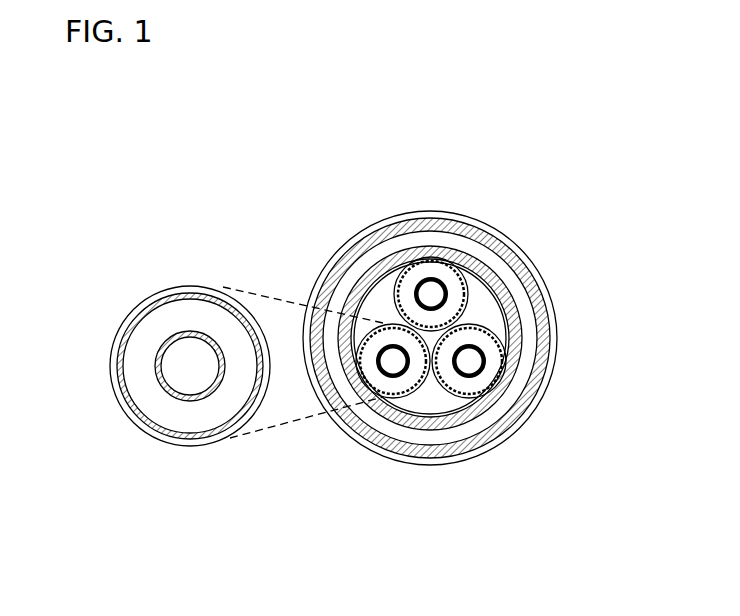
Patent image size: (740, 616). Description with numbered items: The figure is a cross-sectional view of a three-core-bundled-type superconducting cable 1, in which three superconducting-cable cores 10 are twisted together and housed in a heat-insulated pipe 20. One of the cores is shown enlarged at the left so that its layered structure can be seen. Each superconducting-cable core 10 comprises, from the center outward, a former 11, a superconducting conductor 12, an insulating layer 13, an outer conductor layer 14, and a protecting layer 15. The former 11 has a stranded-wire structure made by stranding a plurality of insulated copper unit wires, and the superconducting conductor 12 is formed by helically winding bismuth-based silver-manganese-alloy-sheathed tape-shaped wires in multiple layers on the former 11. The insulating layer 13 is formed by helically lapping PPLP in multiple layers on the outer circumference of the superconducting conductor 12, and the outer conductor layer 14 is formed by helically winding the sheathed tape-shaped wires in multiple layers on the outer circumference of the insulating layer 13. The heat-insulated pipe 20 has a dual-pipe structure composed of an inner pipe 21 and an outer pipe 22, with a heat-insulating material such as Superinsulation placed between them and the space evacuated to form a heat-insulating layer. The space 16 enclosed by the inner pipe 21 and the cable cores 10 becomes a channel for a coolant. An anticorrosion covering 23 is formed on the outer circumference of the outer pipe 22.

The superconducting cable 1 is at (454, 338).
The superconducting-cable core 10 is at (205, 349).
The former 11 is at (147, 328).
The superconducting conductor 12 is at (145, 372).
The insulating layer 13 is at (163, 381).
The outer conductor layer 14 is at (190, 398).
The protecting layer 15 is at (190, 395).
The space 16 is at (465, 323).
The heat-insulated pipe 20 is at (485, 115).
The inner pipe 21 is at (430, 285).
The outer pipe 22 is at (430, 299).
The anticorrosion covering 23 is at (462, 338).